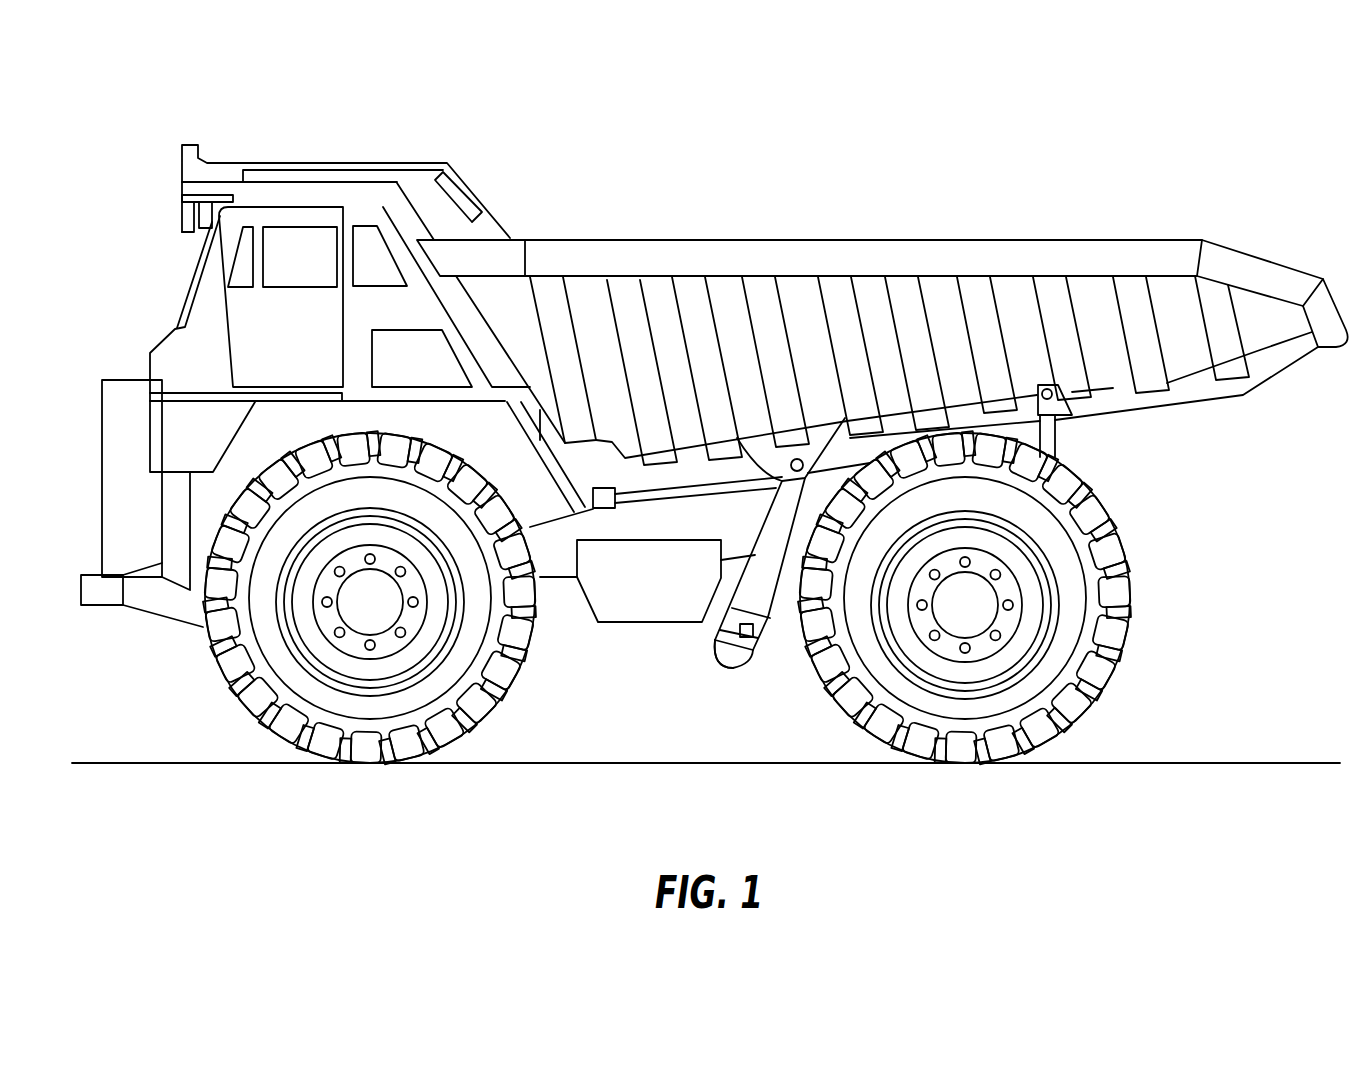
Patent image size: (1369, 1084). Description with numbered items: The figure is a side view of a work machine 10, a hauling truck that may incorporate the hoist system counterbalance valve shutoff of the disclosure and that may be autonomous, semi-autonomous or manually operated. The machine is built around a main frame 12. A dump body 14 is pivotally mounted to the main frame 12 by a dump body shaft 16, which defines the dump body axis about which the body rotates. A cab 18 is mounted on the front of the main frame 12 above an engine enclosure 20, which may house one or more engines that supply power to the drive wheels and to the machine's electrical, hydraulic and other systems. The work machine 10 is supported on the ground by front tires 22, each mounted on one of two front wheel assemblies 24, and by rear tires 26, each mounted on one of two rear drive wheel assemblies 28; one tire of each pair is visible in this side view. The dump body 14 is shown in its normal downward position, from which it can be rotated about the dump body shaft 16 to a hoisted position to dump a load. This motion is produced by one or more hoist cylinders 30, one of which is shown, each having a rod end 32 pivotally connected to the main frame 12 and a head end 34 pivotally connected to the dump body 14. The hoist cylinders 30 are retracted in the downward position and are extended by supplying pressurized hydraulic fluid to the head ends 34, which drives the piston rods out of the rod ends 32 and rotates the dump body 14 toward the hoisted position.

The work machine 10 is at (701, 461).
The main frame 12 is at (550, 553).
The dump body 14 is at (793, 257).
The dump body shaft 16 is at (1051, 400).
The cab 18 is at (240, 312).
The engine enclosure 20 is at (235, 458).
The front tires 22 is at (295, 725).
The front wheel assemblies 24 is at (387, 663).
The rear tires 26 is at (1000, 748).
The rear drive wheel assemblies 28 is at (1010, 650).
The hoist cylinders 30 is at (755, 583).
The rod end 32 is at (770, 618).
The head end 34 is at (797, 497).